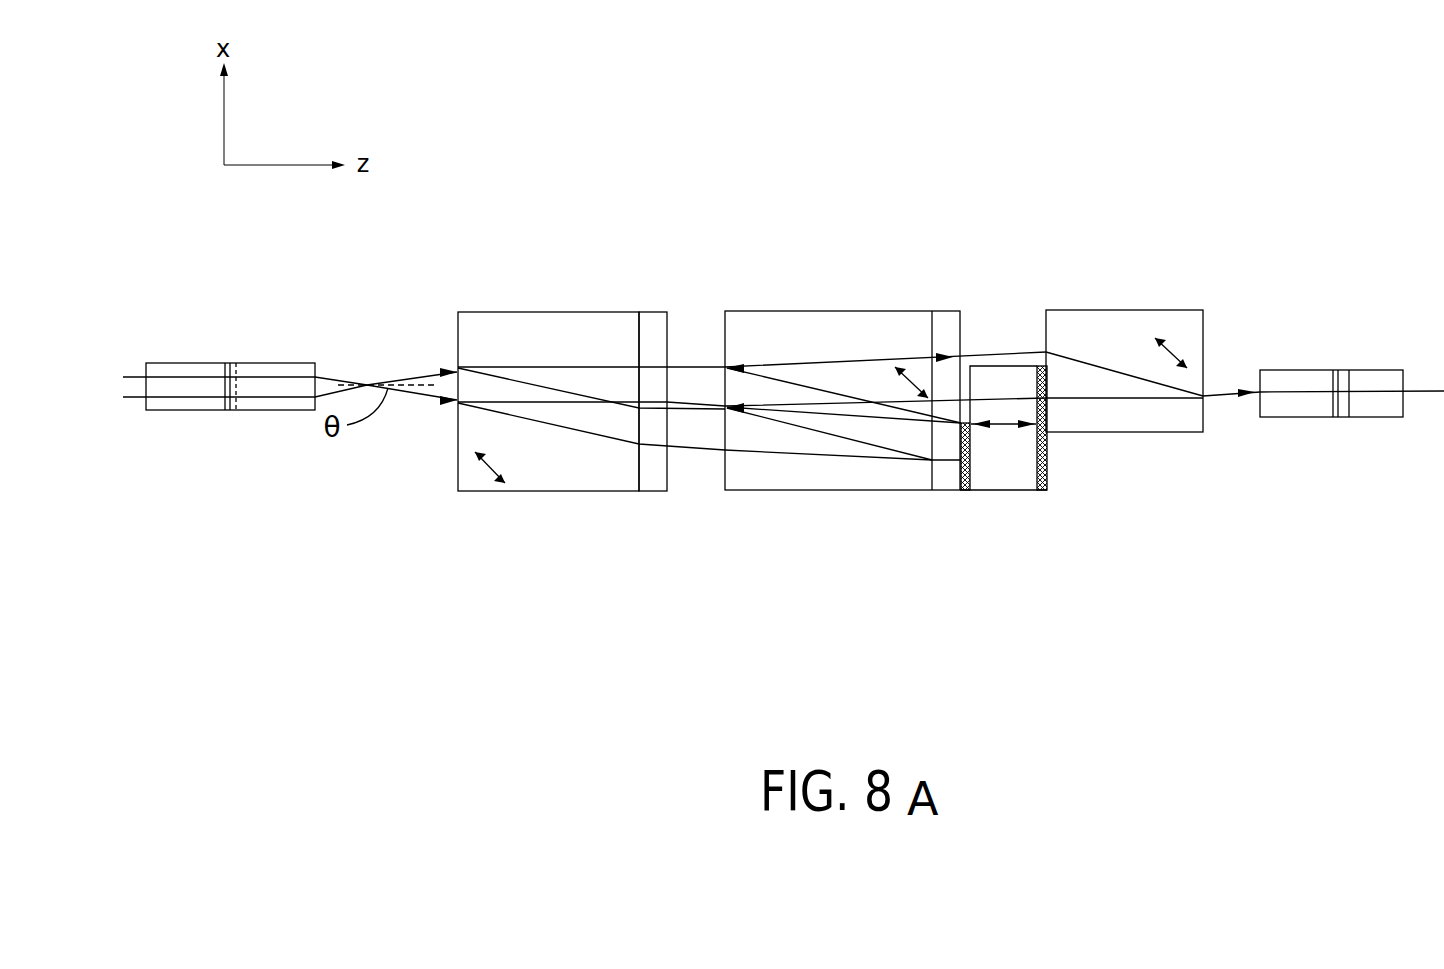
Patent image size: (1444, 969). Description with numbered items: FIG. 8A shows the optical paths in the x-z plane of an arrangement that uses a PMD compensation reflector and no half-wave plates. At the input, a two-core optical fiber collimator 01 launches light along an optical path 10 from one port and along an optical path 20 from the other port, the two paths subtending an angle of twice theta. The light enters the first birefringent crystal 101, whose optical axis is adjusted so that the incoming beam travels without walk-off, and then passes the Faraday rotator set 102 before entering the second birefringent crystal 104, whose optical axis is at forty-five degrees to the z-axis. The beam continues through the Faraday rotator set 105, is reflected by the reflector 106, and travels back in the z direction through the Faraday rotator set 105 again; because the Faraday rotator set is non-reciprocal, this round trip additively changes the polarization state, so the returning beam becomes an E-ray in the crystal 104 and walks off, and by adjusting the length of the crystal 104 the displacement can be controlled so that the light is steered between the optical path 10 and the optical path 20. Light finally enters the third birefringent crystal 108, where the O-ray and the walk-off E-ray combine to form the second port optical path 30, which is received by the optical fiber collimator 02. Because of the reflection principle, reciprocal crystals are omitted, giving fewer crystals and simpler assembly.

The two-core optical fiber collimator 01 is at (222, 340).
The optical fiber collimator 02 is at (1359, 345).
The optical path 10 is at (412, 394).
The optical path 20 is at (414, 372).
The second port optical path 30 is at (1220, 397).
The first birefringent crystal 101 is at (532, 492).
The Faraday rotator set 102 is at (653, 492).
The second birefringent crystal 104 is at (855, 492).
The Faraday rotator set 105 is at (943, 492).
The reflector 106 is at (1013, 492).
The third birefringent crystal 108 is at (1137, 308).